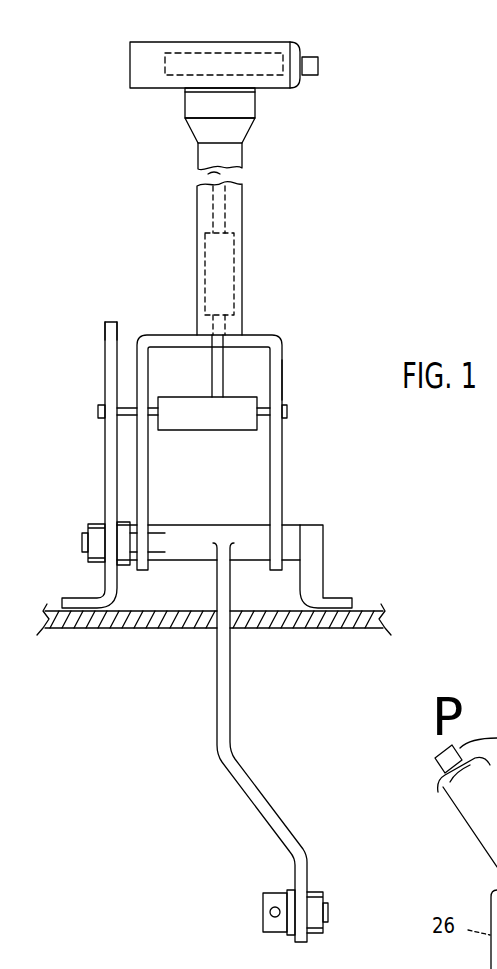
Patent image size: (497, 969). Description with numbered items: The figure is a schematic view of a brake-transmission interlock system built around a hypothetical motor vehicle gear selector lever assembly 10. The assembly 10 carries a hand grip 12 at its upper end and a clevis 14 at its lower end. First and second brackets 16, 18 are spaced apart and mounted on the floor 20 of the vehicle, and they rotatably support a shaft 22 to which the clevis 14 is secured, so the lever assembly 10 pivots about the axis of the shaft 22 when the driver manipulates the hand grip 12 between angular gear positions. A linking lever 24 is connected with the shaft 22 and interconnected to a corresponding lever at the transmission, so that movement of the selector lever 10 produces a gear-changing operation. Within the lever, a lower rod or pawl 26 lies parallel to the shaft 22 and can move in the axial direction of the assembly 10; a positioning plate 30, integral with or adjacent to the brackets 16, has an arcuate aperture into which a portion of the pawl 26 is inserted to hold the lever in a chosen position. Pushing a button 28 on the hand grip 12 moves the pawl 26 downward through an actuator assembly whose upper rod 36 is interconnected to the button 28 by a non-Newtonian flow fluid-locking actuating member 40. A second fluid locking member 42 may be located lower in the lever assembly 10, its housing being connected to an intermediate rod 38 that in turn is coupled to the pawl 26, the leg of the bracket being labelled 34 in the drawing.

The gear selector lever assembly 10 is at (270, 243).
The hand grip 12 is at (238, 42).
The clevis 14 is at (278, 340).
The first bracket 16 is at (103, 475).
The second bracket 18 is at (323, 550).
The floor 20 is at (73, 628).
The shaft 22 is at (78, 542).
The linking lever 24 is at (283, 817).
The lower rod or pawl 26 is at (97, 410).
The button 28 is at (320, 63).
The positioning plate 30 is at (110, 333).
The bracket leg 34 is at (277, 377).
The upper rod 36 is at (215, 180).
The intermediate rod 38 is at (217, 370).
The fluid locking actuating member 40 is at (163, 62).
The fluid locking member 42 is at (200, 260).